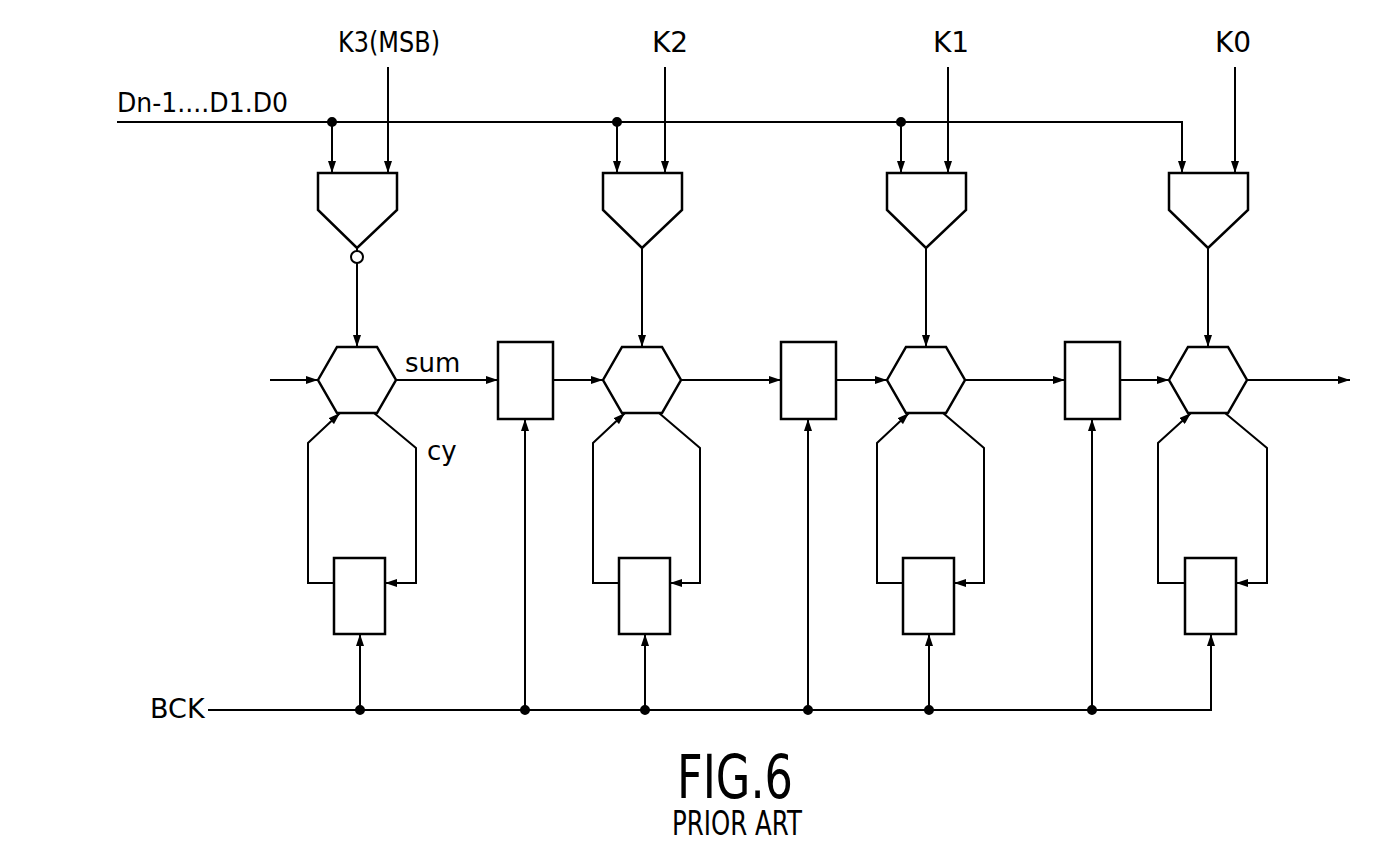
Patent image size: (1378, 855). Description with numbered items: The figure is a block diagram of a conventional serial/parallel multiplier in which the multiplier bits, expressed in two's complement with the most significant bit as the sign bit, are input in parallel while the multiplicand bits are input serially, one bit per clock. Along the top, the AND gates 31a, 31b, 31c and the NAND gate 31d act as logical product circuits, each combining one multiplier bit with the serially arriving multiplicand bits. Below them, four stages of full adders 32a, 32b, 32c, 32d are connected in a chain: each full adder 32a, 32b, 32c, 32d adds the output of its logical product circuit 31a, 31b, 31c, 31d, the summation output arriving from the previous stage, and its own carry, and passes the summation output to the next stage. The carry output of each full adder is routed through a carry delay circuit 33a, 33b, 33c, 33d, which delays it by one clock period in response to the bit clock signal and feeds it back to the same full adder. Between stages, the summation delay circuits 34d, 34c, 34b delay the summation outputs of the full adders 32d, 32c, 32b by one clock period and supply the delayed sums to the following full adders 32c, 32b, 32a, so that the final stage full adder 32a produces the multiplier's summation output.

The AND gate 31a is at (1248, 187).
The AND gate 31b is at (966, 187).
The AND gate 31c is at (682, 187).
The NAND gate 31d is at (397, 187).
The full adder 32a is at (1240, 363).
The full adder 32b is at (956, 364).
The full adder 32c is at (672, 364).
The full adder 32d is at (329, 367).
The delay circuit 33a is at (1233, 620).
The delay circuit 33b is at (954, 622).
The delay circuit 33c is at (670, 622).
The delay circuit 33d is at (334, 633).
The delay circuit 34b is at (1092, 342).
The delay circuit 34c is at (825, 342).
The delay circuit 34d is at (525, 342).